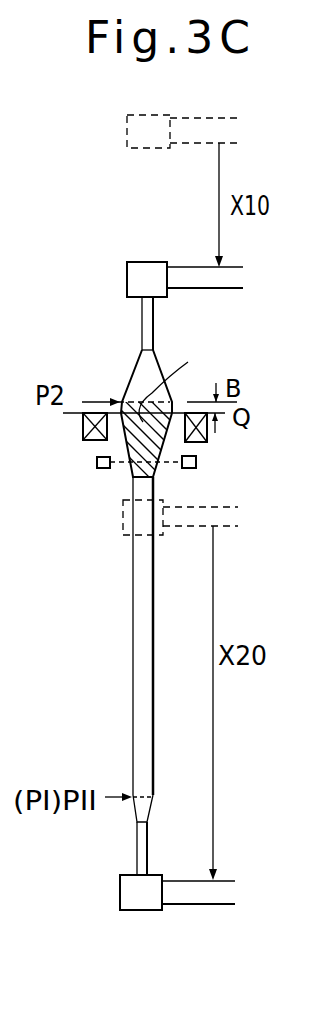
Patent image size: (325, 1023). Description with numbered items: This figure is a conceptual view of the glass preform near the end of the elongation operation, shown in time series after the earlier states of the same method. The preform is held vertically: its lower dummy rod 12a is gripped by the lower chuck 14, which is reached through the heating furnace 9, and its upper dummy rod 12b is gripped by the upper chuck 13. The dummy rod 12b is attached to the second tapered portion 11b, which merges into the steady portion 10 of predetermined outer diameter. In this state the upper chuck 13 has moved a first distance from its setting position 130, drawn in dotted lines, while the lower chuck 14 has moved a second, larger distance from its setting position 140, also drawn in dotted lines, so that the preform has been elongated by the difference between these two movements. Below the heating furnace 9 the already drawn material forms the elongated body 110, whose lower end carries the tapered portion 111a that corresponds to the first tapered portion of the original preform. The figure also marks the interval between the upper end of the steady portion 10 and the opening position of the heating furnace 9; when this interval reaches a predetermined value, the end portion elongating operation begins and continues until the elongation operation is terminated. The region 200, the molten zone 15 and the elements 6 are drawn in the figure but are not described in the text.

The setting position of upper chuck 130 is at (203, 118).
The upper chuck 13 is at (138, 262).
The dummy rod 12b is at (150, 328).
The second tapered portion 11b is at (135, 373).
The steady portion 10 is at (131, 422).
The interface region 200 is at (186, 379).
The heating furnace 9 is at (83, 440).
The molten zone 15 is at (133, 465).
The temperature sensor 6 is at (196, 466).
The setting position of lower chuck 140 is at (230, 500).
The drawn rod 110 is at (130, 665).
The tapered portion 111a is at (150, 810).
The dummy rod 12a is at (137, 848).
The lower chuck 14 is at (140, 903).